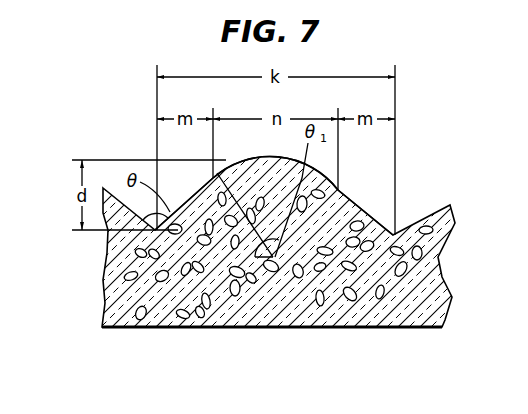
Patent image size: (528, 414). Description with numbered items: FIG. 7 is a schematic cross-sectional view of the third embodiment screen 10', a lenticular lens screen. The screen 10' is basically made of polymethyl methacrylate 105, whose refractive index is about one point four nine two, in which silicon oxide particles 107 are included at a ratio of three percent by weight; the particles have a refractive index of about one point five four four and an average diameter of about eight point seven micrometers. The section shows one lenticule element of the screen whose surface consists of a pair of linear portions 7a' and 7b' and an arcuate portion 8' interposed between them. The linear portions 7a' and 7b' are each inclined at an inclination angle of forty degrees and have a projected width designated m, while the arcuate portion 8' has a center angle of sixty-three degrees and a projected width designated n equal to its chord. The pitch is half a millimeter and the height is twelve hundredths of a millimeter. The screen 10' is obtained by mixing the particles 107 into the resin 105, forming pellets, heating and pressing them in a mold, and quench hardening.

The linear portion 7a' is at (184, 202).
The linear portion 7b' is at (365, 208).
The arcuate portion 8' is at (275, 160).
The third embodiment screen 10' is at (299, 215).
The polymethyl methacrylate 105 is at (433, 247).
The silicon oxide particles 107 is at (438, 321).